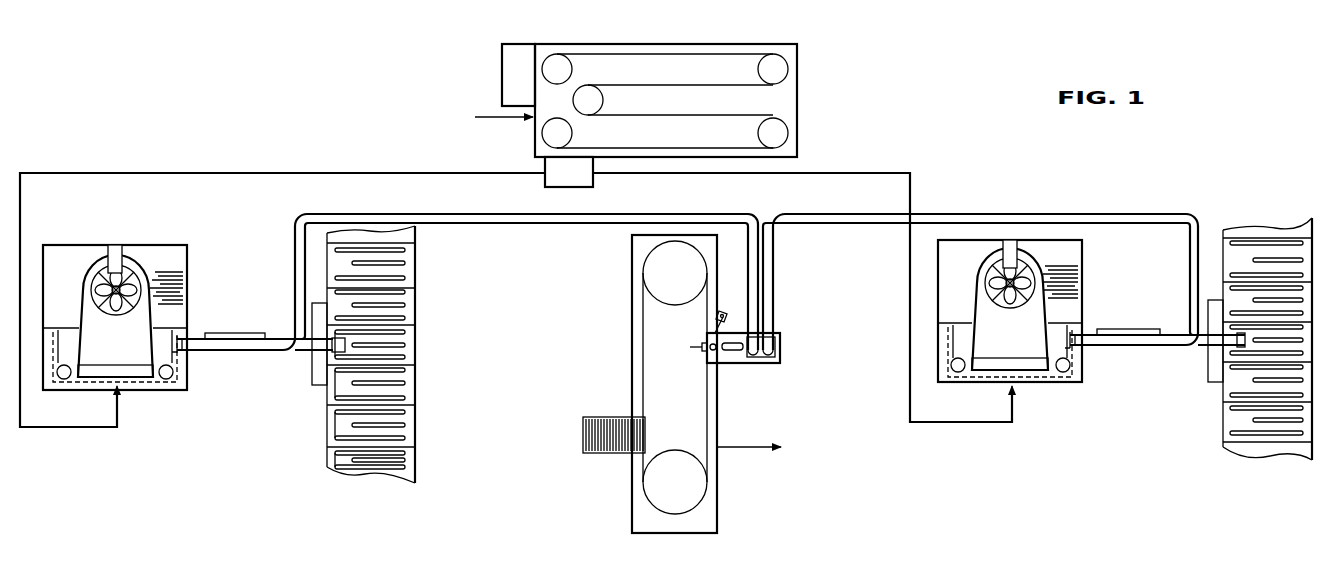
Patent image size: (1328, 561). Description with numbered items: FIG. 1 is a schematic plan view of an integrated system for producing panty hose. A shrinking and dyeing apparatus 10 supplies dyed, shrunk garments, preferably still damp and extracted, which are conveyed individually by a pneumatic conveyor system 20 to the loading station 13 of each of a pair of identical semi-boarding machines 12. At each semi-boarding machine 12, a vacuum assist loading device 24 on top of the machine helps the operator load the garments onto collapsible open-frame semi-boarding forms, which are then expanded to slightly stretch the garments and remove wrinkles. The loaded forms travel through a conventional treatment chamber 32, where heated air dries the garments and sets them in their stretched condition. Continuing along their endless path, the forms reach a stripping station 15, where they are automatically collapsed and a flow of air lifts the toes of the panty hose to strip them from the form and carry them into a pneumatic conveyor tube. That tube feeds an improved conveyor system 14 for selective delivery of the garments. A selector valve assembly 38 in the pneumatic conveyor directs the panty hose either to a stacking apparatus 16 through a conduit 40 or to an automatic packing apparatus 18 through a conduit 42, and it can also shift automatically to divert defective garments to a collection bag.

The shrinking and dyeing apparatus 10 is at (805, 105).
The semi-boarding machine 12 is at (191, 271).
The loading station 13 is at (127, 389).
The conveyor system 14 is at (200, 328).
The stripping station 15 is at (185, 361).
The stacking apparatus 16 is at (317, 402).
The automatic packing apparatus 18 is at (728, 411).
The pneumatic conveyor system 20 is at (408, 172).
The vacuum assist loading device 24 is at (78, 296).
The treatment chamber 32 is at (173, 253).
The selector valve assembly 38 is at (248, 332).
The conduit 40 is at (296, 362).
The conduit 42 is at (532, 221).